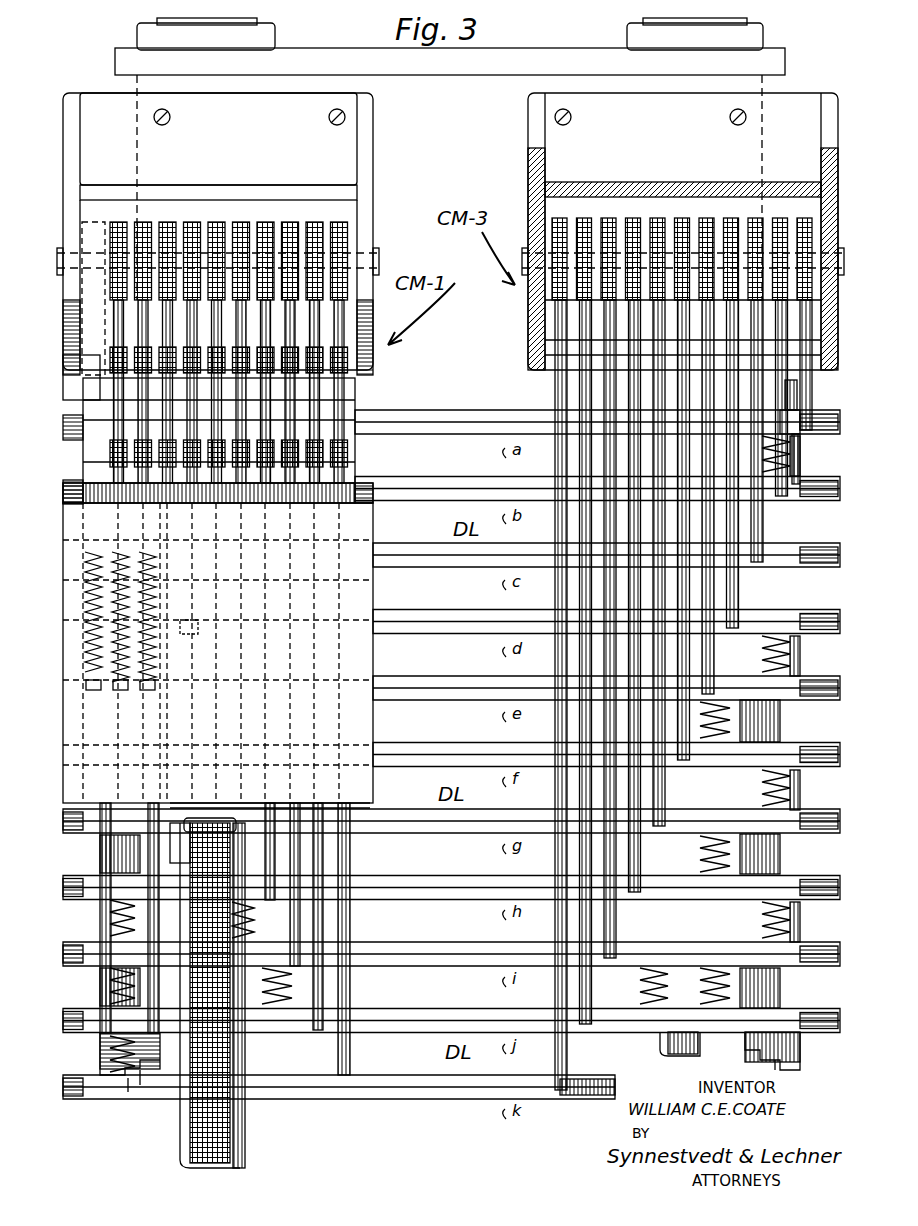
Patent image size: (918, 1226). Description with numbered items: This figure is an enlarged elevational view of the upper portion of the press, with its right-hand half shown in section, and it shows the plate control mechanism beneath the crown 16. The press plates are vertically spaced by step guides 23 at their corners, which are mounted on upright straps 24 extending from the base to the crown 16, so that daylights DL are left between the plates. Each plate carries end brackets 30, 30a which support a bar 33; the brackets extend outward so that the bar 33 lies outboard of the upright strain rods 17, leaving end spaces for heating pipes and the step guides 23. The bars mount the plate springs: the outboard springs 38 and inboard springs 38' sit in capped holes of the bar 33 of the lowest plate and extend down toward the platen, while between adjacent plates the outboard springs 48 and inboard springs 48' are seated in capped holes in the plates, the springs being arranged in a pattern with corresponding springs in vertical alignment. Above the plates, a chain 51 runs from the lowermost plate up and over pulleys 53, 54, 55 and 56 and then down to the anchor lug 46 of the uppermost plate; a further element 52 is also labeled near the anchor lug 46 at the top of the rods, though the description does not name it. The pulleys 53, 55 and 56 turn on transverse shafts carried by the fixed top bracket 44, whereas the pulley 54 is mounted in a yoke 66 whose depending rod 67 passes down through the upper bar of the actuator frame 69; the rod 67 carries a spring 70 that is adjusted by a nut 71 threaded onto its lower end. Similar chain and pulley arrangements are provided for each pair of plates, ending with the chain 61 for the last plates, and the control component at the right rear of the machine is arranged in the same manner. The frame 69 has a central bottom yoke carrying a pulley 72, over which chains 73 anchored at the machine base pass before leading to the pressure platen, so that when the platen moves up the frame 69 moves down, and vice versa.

The crown 16 is at (462, 140).
The fixed top bracket 44 is at (360, 158).
The pulley 55 is at (352, 240).
The chain 51 is at (145, 222).
The pulley 56 is at (690, 228).
The pulley 53 is at (760, 314).
The pulley 54 is at (80, 408).
The yoke 66 is at (340, 472).
The actuator or frame 69 is at (373, 586).
The depending rod 67 is at (130, 520).
The spring 70 is at (150, 590).
The nut 71 is at (140, 690).
The end bracket 30 is at (838, 484).
The end bracket 30a is at (70, 442).
The chain 61 is at (350, 856).
The anchor lug 46 is at (800, 418).
The pin 52 is at (805, 459).
The outboard springs 38 is at (453, 754).
The outboard springs 48 is at (453, 854).
The inboard springs 38' is at (446, 920).
The inboard springs 48' is at (667, 985).
The pulley 72 is at (208, 822).
The chains 73 is at (215, 1150).
The upright strain rods 17 is at (246, 1128).
The upright straps 24 is at (105, 1118).
The step guides 23 is at (136, 1128).
The bar 33 is at (478, 478).